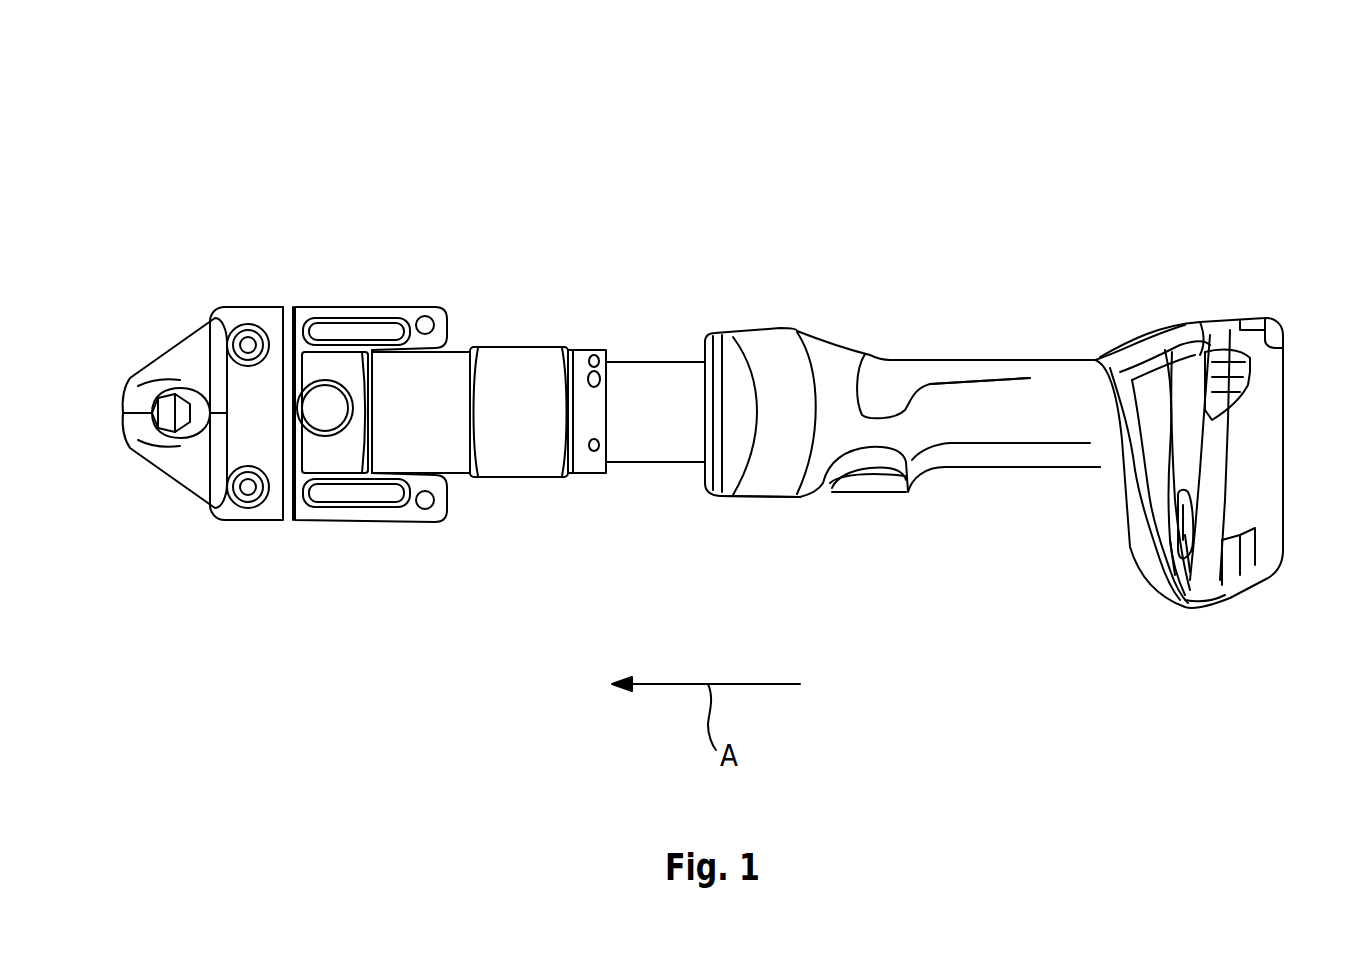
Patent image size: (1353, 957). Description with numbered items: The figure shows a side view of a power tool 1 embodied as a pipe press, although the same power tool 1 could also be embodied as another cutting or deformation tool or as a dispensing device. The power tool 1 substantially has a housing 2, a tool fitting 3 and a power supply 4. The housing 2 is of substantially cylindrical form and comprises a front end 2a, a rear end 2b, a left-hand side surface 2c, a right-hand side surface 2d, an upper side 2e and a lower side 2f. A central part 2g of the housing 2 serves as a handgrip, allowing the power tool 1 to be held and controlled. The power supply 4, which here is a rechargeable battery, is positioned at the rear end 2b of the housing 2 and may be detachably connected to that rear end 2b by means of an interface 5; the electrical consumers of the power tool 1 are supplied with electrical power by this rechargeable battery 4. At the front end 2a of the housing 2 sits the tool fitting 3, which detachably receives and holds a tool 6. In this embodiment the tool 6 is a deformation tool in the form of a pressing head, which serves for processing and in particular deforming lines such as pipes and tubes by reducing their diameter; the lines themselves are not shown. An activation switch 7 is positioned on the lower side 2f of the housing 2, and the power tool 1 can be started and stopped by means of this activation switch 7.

The power tool 1 is at (650, 142).
The housing 2 is at (793, 410).
The front end 2a is at (505, 365).
The rear end 2b is at (1175, 345).
The left-hand side surface 2c is at (958, 415).
The right-hand side surface 2d is at (1040, 357).
The upper side 2e is at (748, 340).
The lower side 2f is at (754, 498).
The central part 2g is at (985, 475).
The tool fitting 3 is at (400, 440).
The power supply 4 is at (1222, 345).
The interface 5 is at (1200, 503).
The tool 6 is at (191, 355).
The activation switch 7 is at (878, 470).